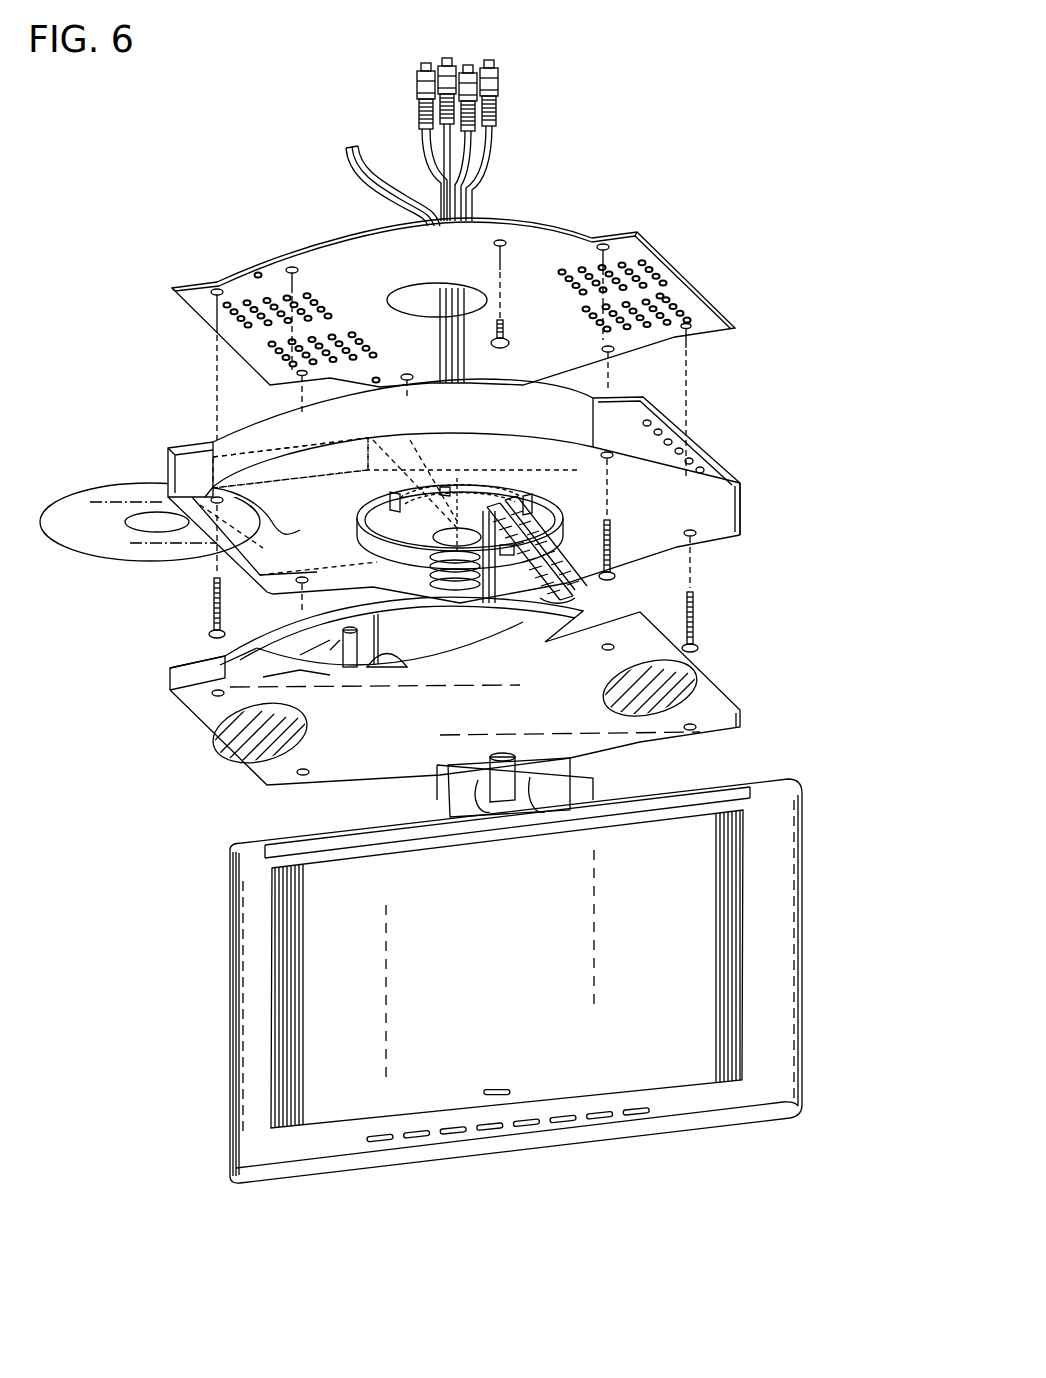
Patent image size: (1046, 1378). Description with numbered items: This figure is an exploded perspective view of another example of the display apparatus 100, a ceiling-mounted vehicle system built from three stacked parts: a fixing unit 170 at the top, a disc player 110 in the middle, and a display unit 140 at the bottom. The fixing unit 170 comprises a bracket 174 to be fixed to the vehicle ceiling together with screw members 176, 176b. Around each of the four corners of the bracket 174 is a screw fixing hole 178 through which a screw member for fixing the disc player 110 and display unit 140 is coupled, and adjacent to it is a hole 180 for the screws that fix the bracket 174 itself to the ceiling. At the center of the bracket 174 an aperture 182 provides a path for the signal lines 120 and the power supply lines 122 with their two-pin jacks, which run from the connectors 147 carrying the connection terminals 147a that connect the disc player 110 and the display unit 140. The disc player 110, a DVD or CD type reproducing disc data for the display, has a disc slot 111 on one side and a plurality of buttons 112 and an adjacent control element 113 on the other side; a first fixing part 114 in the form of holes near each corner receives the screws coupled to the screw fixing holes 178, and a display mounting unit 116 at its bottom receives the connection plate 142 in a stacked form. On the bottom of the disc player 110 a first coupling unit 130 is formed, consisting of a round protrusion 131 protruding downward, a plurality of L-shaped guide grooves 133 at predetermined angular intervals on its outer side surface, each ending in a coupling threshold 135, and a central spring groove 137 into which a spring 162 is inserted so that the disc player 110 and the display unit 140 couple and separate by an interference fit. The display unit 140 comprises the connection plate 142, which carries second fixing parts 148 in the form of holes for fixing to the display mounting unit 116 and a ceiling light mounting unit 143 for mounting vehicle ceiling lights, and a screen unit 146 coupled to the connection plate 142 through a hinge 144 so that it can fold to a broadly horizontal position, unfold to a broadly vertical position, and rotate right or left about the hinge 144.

The display apparatus 100 is at (229, 216).
The disc player 110 is at (750, 485).
The disc slot 111 is at (217, 488).
The buttons 112 is at (650, 430).
The operation buttons 113 is at (660, 442).
The first fixing part 114 is at (217, 501).
The display mounting unit 116 is at (712, 532).
The signal lines 120 is at (478, 150).
The side cable 122 is at (430, 198).
The first coupling unit 130 is at (340, 534).
The round protrusion 131 is at (383, 522).
The guide grooves 133 is at (527, 498).
The coupling threshold 135 is at (463, 478).
The spring groove 137 is at (450, 530).
The display unit 140 is at (795, 772).
The connection plate 142 is at (710, 681).
The ceiling light mounting unit 143 is at (172, 672).
The hinge 144 is at (445, 790).
The screen unit 146 is at (342, 1075).
The connectors 147 is at (417, 82).
The connection terminals 147a is at (560, 548).
The second fixing parts 148 is at (217, 695).
The spring 162 is at (552, 600).
The fixing unit 170 is at (661, 242).
The bracket 174 is at (675, 292).
The screw members 176 is at (510, 329).
The screw 176b is at (208, 605).
The screw fixing hole 178 is at (217, 296).
The holes 180 is at (520, 248).
The aperture 182 is at (408, 306).